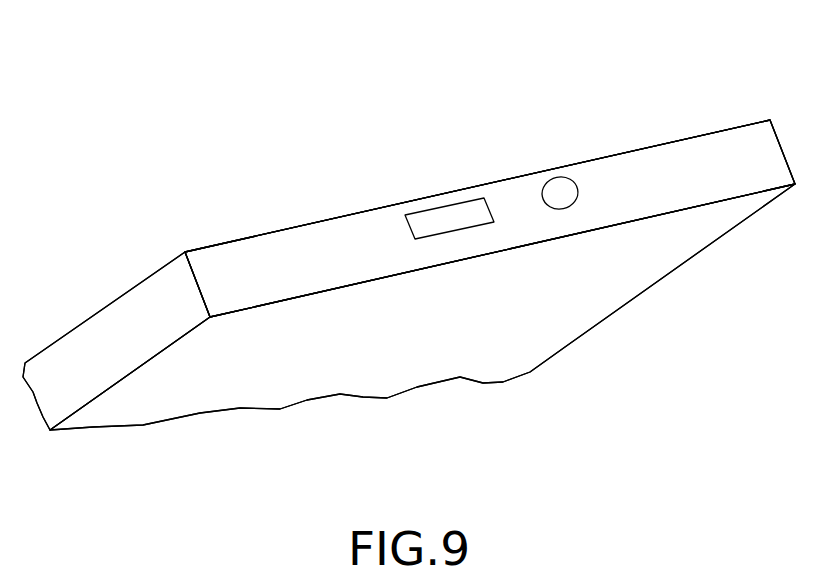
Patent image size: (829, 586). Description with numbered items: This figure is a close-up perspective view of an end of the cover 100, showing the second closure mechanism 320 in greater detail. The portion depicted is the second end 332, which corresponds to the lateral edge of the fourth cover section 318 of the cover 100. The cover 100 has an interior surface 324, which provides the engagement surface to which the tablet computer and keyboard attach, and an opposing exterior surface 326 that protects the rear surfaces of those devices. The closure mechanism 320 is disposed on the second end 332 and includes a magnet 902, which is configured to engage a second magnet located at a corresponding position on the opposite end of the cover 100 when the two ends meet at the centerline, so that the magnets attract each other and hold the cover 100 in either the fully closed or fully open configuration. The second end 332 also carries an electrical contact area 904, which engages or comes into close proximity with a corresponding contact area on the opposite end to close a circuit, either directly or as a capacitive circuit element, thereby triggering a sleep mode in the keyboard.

The cover 100 is at (752, 137).
The second closure mechanism 320 is at (524, 95).
The fourth cover section 318 is at (330, 220).
The second end 332 is at (223, 258).
The exterior surface 326 is at (133, 288).
The interior surface 324 is at (623, 283).
The electrical contact area 904 is at (418, 215).
The magnet 902 is at (573, 178).